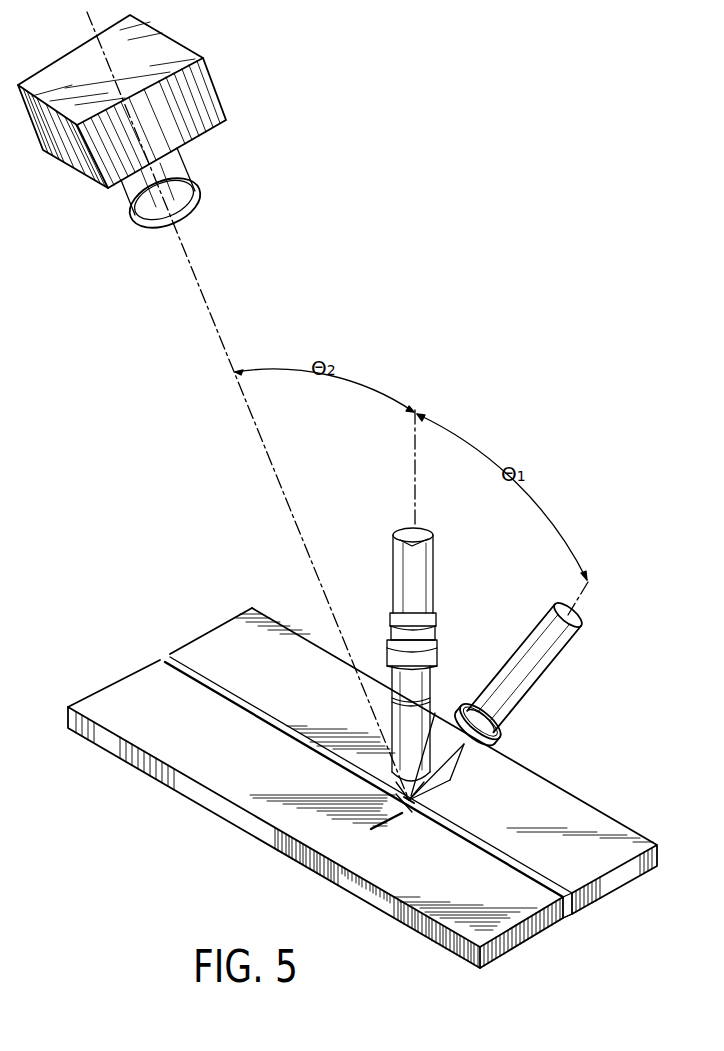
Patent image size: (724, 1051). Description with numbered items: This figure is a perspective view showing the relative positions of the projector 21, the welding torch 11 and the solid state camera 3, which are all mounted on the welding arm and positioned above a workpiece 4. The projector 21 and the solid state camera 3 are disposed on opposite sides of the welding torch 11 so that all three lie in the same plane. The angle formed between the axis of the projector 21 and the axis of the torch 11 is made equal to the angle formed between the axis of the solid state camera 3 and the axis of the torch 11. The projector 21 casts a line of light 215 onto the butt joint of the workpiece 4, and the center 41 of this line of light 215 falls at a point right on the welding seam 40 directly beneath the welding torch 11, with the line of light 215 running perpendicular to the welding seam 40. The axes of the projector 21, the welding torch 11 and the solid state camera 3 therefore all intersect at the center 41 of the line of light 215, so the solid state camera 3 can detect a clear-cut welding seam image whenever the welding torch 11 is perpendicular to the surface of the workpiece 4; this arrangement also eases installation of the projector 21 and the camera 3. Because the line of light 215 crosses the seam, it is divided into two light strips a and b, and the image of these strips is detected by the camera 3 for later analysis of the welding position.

The solid state camera 3 is at (182, 133).
The welding torch 11 is at (422, 587).
The projector 21 is at (547, 652).
The workpiece 4 is at (578, 808).
The welding seam 40 is at (566, 915).
The center of the line of light 41 is at (428, 808).
The line of light 215 is at (374, 831).
The light strip a is at (402, 812).
The light strip b is at (450, 780).